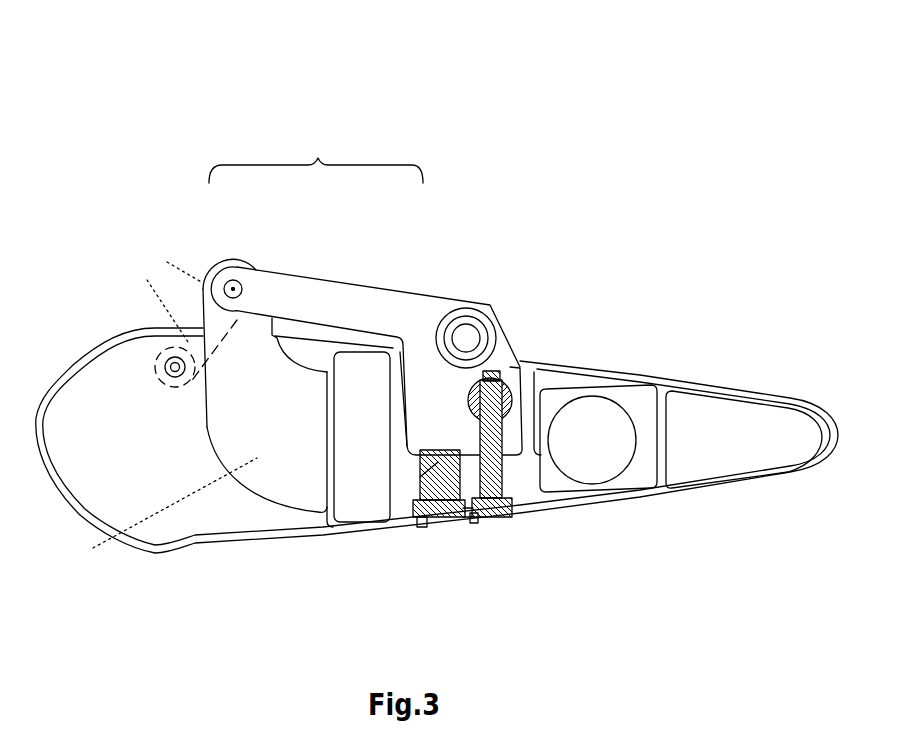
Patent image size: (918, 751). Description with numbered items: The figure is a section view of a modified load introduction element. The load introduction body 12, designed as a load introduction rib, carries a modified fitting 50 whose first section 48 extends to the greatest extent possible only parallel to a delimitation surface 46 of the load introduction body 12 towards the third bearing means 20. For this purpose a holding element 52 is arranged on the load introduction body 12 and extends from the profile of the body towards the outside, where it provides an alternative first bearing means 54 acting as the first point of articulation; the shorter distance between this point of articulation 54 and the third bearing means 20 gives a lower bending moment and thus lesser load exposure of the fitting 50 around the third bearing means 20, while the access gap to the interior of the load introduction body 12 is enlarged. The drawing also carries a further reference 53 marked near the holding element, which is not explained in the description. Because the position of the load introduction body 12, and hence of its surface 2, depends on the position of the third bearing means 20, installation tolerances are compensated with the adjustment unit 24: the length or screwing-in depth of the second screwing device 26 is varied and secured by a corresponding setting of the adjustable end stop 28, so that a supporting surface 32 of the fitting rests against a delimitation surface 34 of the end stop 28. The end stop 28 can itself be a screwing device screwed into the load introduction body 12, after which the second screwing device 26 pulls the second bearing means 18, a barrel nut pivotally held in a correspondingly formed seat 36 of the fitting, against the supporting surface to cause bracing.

The surface 2 is at (668, 368).
The load introduction body 12 is at (220, 528).
The second bearing means 18 is at (540, 400).
The third bearing means 20 is at (488, 310).
The adjustment unit 24 is at (468, 530).
The second screwing device 26 is at (492, 518).
The adjustable end stop 28 is at (427, 520).
The supporting surface 32 is at (436, 437).
The delimitation surface 34 is at (420, 477).
The seat 36 is at (503, 372).
The delimitation surface 46 is at (137, 318).
The first section 48 is at (316, 152).
The modified fitting 50 is at (375, 302).
The holding element 52 is at (225, 431).
The pivot axis 53 is at (212, 133).
The alternative first bearing means 54 is at (266, 276).